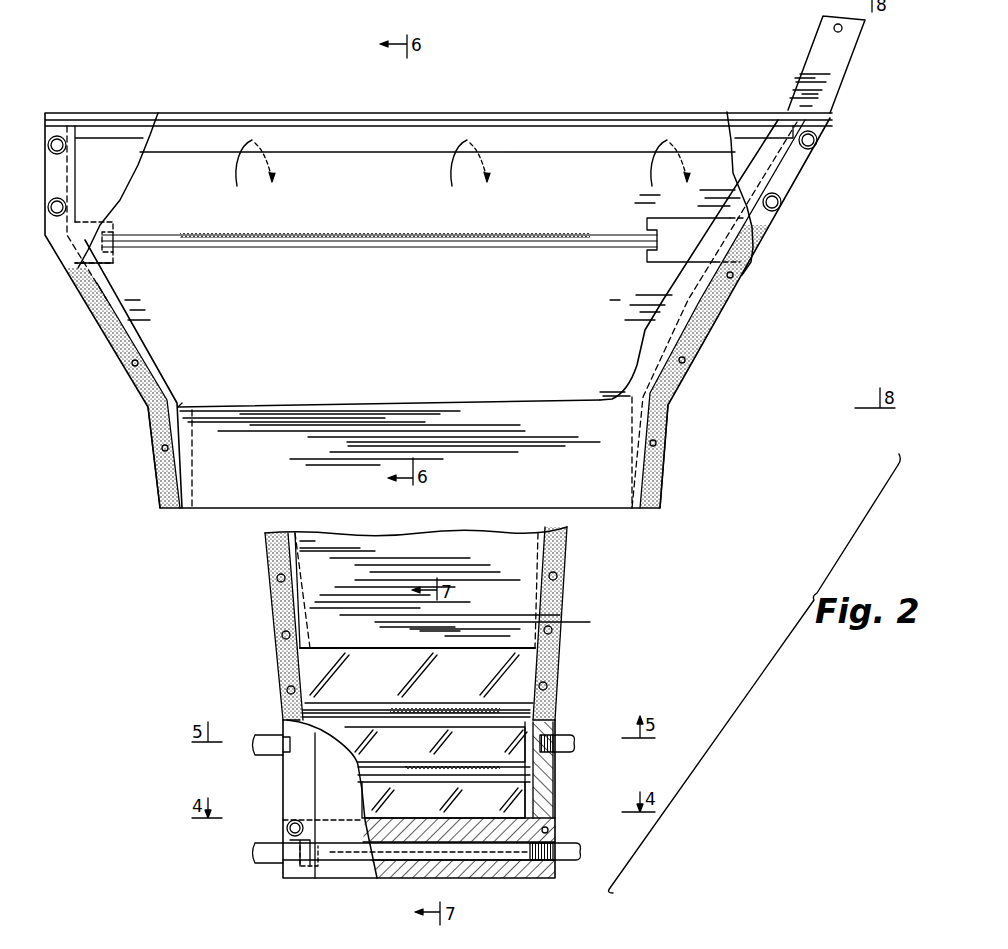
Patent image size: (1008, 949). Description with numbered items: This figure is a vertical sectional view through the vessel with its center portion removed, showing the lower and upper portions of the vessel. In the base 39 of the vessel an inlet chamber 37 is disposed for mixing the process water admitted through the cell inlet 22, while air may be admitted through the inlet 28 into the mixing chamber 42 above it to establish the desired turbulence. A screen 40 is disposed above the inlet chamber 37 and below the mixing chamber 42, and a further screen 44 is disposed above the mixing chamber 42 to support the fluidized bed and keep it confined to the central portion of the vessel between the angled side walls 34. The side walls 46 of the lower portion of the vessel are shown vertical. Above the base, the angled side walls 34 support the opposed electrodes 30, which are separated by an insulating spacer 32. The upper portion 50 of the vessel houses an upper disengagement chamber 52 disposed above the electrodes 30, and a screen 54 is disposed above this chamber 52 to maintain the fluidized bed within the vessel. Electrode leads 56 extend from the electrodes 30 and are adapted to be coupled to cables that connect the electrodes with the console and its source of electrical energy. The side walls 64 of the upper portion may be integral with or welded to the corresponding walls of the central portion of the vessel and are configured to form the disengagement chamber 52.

The cell inlet 22 is at (565, 852).
The inlet 28 is at (560, 733).
The electrode 30 is at (557, 476).
The insulating spacer 32 is at (180, 404).
The side wall 34 is at (152, 440).
The inlet chamber 37 is at (418, 809).
The base 39 is at (603, 786).
The screen 40 is at (545, 793).
The mixing chamber 42 is at (457, 758).
The screen 44 is at (533, 715).
The side wall 46 is at (296, 784).
The upper portion 50 is at (769, 265).
The upper disengagement chamber 52 is at (392, 337).
The screen 54 is at (522, 240).
The electrode lead 56 is at (806, 52).
The side wall 64 is at (104, 332).